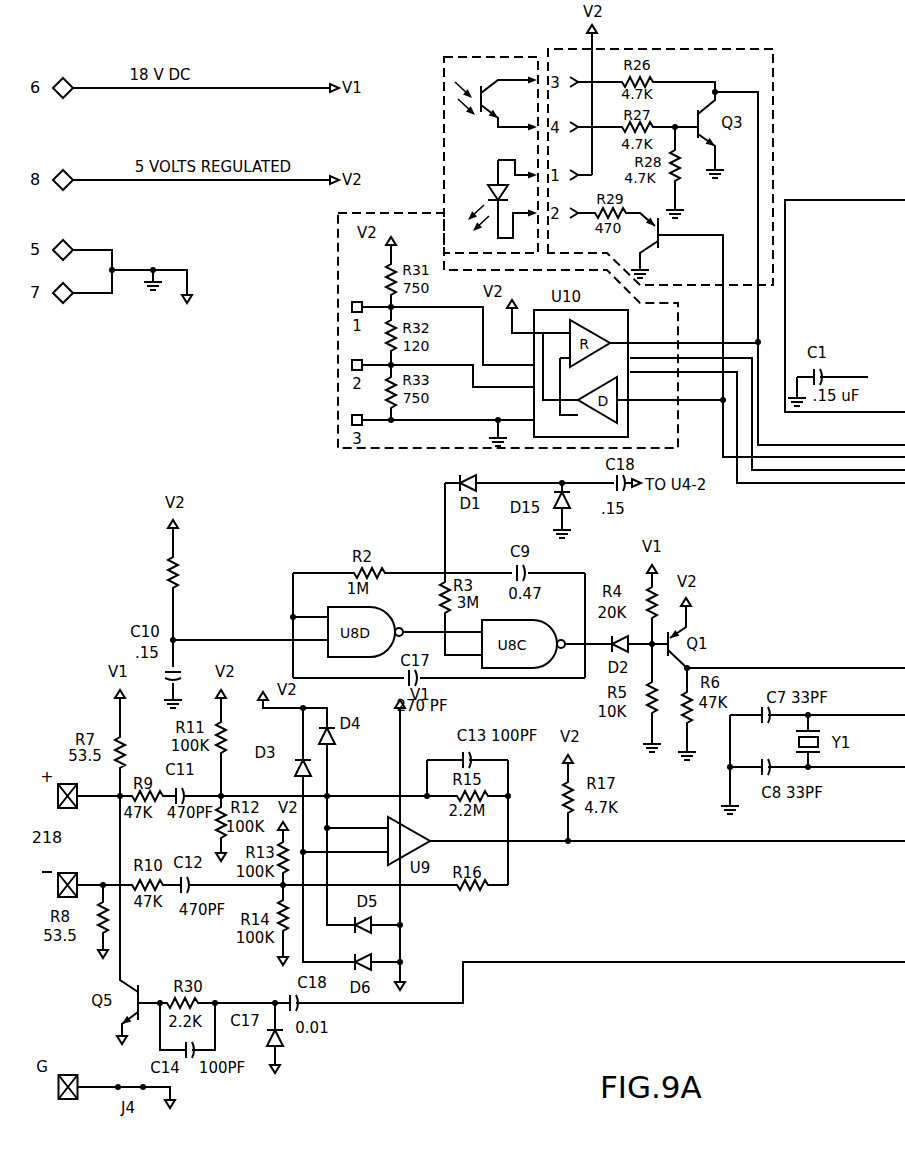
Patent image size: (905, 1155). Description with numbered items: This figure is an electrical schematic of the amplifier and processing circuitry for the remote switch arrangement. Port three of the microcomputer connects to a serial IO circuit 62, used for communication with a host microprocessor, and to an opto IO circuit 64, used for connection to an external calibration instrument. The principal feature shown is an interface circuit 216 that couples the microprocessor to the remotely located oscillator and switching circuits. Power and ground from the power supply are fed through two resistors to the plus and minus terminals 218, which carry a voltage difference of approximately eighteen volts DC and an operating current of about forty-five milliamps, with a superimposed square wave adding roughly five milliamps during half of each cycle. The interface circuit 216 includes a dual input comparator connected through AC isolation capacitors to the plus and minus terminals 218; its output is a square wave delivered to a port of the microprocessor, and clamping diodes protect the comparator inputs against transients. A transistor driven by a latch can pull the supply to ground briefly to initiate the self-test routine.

The serial IO circuit 62 is at (409, 214).
The opto IO circuit 64 is at (747, 65).
The interface circuit 216 is at (598, 852).
The plus and minus terminals 218 is at (68, 868).